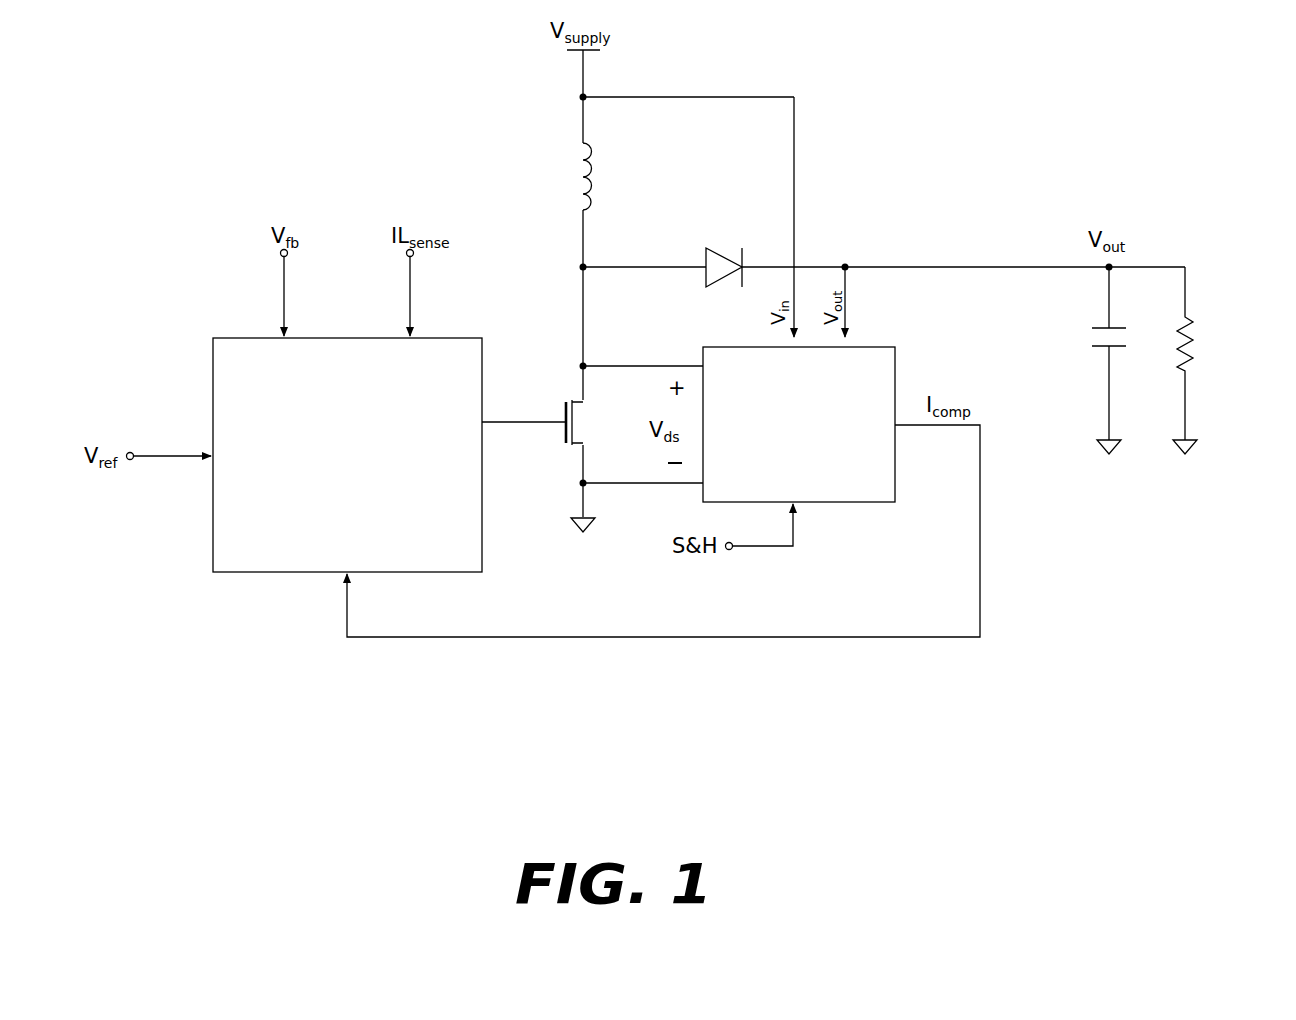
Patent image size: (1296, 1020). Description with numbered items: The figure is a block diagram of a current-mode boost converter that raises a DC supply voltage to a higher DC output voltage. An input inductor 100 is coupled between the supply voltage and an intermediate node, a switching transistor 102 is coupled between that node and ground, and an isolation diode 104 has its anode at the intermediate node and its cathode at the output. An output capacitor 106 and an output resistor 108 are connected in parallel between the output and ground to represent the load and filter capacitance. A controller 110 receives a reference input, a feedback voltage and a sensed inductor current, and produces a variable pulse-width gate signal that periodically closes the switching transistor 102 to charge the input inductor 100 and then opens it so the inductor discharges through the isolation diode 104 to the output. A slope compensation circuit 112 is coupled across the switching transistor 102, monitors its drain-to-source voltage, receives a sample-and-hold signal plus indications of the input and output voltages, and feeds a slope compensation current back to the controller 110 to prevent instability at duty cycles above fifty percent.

The input inductor 100 is at (600, 183).
The switching transistor 102 is at (580, 427).
The isolation diode 104 is at (722, 250).
The output capacitor 106 is at (1100, 350).
The output resistor 108 is at (1190, 320).
The controller 110 is at (252, 572).
The slope compensation circuit 112 is at (895, 471).